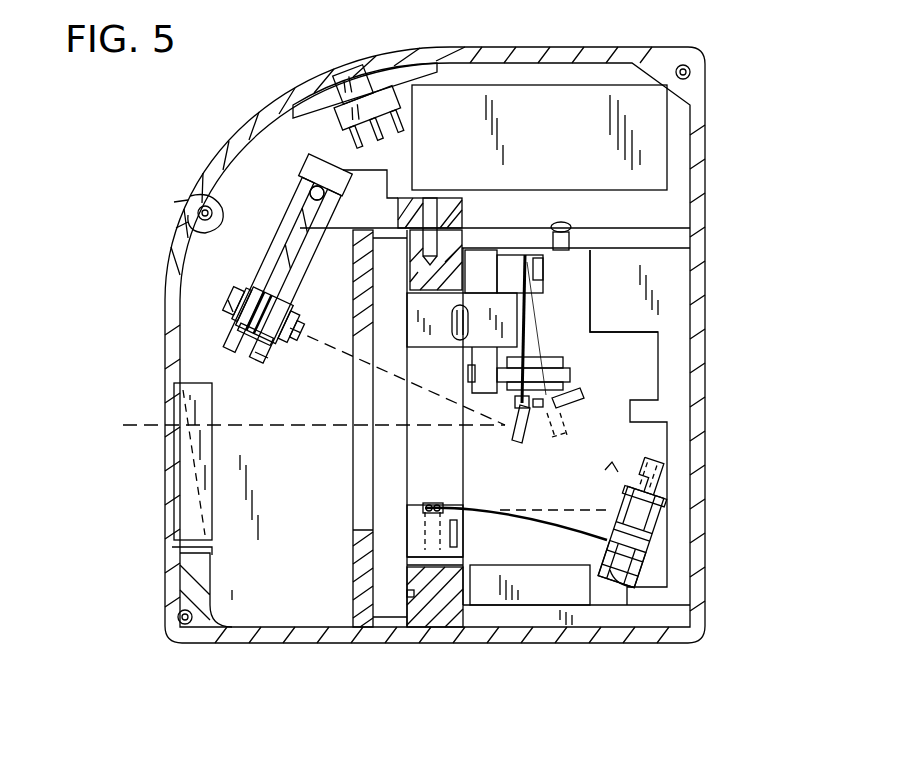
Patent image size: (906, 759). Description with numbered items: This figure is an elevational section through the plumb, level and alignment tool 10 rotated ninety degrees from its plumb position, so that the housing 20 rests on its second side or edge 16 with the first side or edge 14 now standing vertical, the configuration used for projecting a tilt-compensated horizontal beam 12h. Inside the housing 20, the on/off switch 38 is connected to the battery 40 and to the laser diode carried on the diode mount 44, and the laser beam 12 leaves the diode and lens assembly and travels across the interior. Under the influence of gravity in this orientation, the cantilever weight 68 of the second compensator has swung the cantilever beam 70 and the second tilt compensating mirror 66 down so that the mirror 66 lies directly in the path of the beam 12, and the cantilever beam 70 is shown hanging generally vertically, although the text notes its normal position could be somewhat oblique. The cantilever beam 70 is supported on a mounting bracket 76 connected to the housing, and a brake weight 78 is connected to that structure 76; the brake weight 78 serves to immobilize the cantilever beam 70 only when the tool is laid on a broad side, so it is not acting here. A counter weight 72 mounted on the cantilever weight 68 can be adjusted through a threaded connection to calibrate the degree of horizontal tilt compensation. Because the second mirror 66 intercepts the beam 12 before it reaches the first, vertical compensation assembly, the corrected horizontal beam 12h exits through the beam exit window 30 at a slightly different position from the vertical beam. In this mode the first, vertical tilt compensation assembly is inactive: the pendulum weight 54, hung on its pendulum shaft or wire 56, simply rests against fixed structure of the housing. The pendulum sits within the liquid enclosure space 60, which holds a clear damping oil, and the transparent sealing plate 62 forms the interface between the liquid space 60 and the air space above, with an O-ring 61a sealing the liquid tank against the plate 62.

The plumb, level and alignment tool 10 is at (165, 169).
The laser beam 12 is at (323, 348).
The horizontal beam 12h is at (140, 423).
The first side or edge 14 is at (705, 277).
The second side or edge 16 is at (327, 647).
The housing 20 is at (622, 45).
The beam exit window 30 is at (172, 477).
The on/off switch 38 is at (342, 80).
The battery 40 is at (480, 143).
The diode mount 44 is at (282, 224).
The pendulum weight 54 is at (655, 512).
The pendulum shaft or wire 56 is at (548, 522).
The liquid enclosure space 60 is at (648, 357).
The O-ring 61a is at (407, 593).
The sealing plate 62 is at (353, 537).
The second tilt compensating mirror 66 is at (507, 430).
The cantilever weight 68 is at (547, 428).
The cantilever beam 70 is at (532, 342).
The counter weight 72 is at (565, 383).
The mounting bracket 76 is at (508, 258).
The brake weight 78 is at (577, 365).